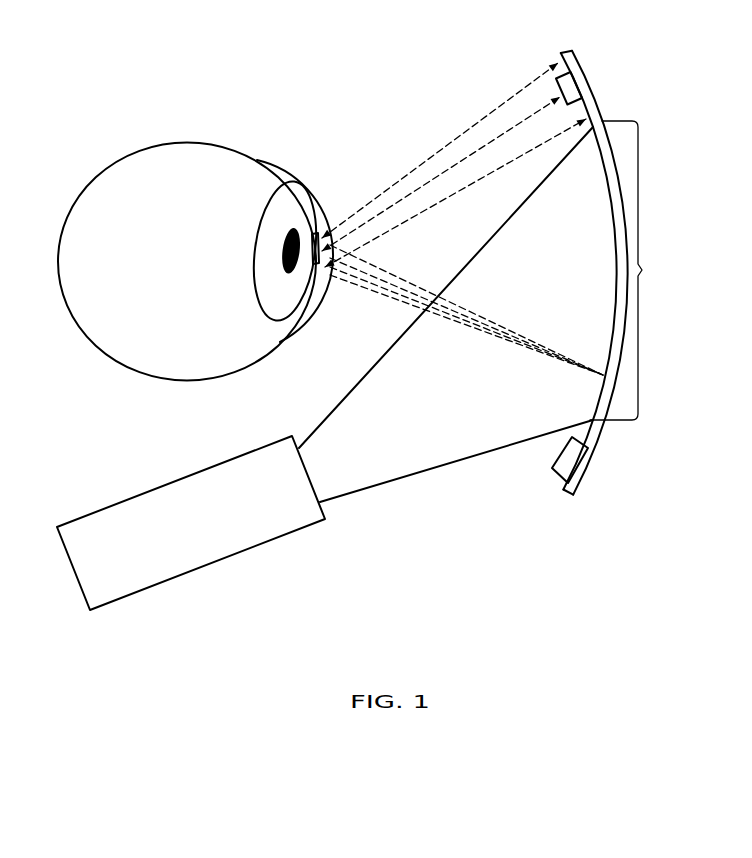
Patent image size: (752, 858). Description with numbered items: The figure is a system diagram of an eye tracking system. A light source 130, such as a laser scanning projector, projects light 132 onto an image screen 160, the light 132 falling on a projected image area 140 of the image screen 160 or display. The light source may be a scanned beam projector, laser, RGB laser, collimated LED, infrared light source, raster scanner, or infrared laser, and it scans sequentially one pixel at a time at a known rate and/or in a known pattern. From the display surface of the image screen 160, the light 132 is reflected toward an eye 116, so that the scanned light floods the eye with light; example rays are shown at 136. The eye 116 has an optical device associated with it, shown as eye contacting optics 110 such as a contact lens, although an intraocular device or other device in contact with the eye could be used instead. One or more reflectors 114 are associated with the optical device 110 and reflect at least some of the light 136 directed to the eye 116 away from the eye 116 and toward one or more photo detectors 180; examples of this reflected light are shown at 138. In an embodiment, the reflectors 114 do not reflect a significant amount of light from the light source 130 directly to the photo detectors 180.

The eye contacting optics 110 is at (280, 175).
The reflectors 114 is at (318, 234).
The eye 116 is at (110, 178).
The light source 130 is at (138, 497).
The light 132 is at (352, 388).
The rays 136 is at (420, 288).
The reflected light 138 is at (420, 165).
The projected image area 140 is at (614, 273).
The image screen 160 is at (596, 438).
The photo detectors 180 is at (578, 88).